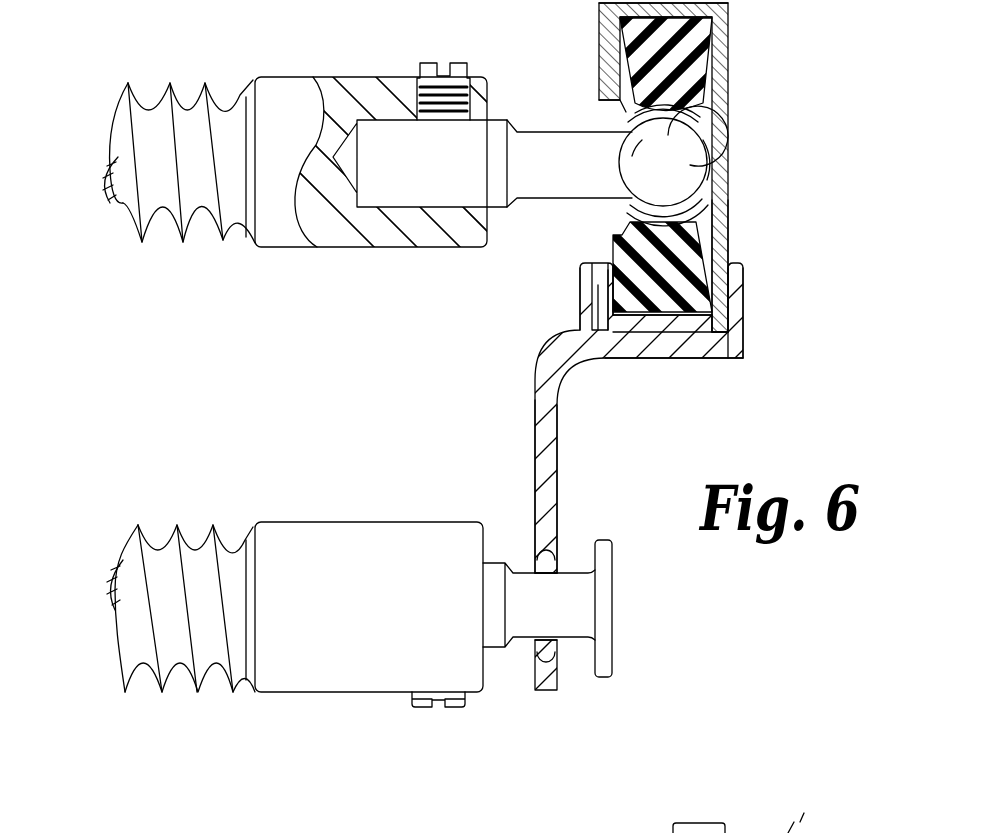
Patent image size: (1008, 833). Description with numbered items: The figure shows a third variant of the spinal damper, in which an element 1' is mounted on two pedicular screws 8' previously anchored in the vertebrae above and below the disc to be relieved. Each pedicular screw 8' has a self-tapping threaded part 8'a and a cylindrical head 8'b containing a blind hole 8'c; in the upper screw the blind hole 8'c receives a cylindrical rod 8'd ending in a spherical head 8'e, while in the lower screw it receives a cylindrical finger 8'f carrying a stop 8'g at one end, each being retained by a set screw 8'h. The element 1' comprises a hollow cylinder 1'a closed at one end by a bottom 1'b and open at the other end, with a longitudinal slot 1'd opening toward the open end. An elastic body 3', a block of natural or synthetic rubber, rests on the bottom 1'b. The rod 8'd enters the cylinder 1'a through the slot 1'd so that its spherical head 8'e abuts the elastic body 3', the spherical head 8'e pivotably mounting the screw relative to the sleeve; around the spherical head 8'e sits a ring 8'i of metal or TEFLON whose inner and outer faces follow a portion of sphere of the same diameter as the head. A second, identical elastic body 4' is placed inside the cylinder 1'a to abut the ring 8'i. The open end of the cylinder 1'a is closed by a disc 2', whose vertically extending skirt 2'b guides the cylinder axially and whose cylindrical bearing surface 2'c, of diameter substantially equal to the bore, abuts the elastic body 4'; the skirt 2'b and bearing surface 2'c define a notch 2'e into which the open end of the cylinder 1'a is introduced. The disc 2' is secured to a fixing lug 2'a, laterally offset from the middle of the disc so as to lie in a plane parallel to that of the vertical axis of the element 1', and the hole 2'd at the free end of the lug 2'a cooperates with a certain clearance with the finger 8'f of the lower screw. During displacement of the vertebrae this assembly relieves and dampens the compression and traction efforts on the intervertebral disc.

The element 1' is at (657, 167).
The hollow cylinder 1'a is at (786, 266).
The bottom 1'b is at (628, 27).
The longitudinal slot 1'd is at (577, 86).
The disc 2' is at (601, 492).
The fixing lug 2'a is at (475, 545).
The skirt 2'b is at (793, 313).
The bearing surface 2'c is at (674, 386).
The hole 2'd is at (624, 654).
The notch 2'e is at (509, 310).
The elastic body 3' is at (614, 165).
The elastic body 4' is at (646, 385).
The pedicular screw 8' is at (459, 424).
The self-tapping threaded part 8'a is at (157, 436).
The cylindrical head 8'b is at (418, 381).
The blind hole 8'c is at (420, 206).
The cylindrical rod 8'd is at (548, 205).
The spherical head 8'e is at (738, 156).
The cylindrical finger 8'f is at (595, 603).
The stop 8'g is at (654, 608).
The set screw 8'h is at (394, 413).
The ring 8'i is at (740, 161).